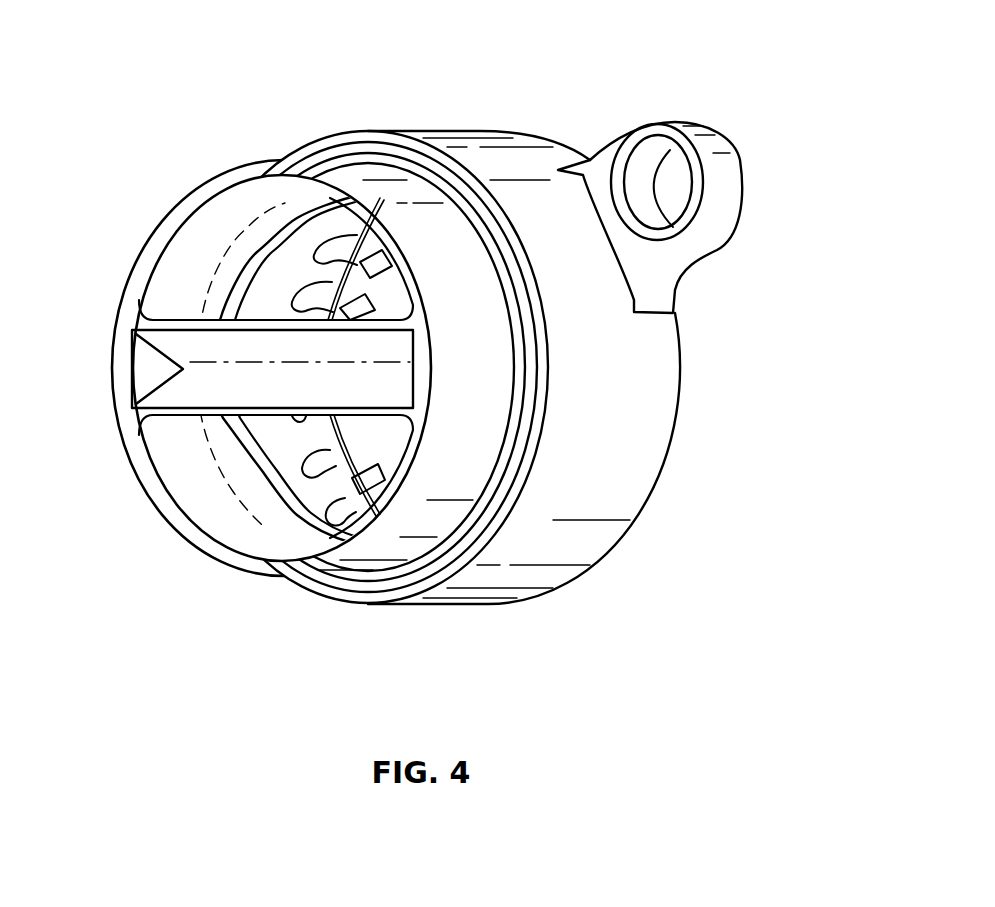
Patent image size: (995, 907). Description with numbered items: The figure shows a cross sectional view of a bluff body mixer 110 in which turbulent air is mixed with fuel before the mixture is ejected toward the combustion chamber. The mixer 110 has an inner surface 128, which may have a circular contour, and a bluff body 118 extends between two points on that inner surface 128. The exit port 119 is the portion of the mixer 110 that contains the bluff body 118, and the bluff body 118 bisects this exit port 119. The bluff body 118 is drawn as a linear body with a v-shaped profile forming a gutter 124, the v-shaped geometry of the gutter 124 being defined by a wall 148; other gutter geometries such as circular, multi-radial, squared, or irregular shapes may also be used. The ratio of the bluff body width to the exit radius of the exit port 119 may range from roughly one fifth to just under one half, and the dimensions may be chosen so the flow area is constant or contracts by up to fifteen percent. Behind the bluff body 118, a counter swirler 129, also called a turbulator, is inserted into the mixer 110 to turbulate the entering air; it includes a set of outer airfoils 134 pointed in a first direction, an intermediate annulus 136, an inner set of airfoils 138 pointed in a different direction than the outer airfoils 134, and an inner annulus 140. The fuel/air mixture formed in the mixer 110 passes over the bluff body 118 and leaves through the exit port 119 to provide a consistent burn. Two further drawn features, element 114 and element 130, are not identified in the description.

The mixer 110 is at (493, 548).
The mounting lug 114 is at (648, 127).
The bluff body 118 is at (220, 323).
The exit port 119 is at (173, 217).
The gutter 124 is at (195, 382).
The inner surface 128 is at (205, 522).
The counter swirler 129 is at (305, 236).
The inner sleeve 130 is at (290, 263).
The outer airfoils 134 is at (338, 248).
The intermediate annulus 136 is at (378, 230).
The inner set of airfoils 138 is at (397, 303).
The inner annulus 140 is at (387, 277).
The wall 148 is at (203, 345).